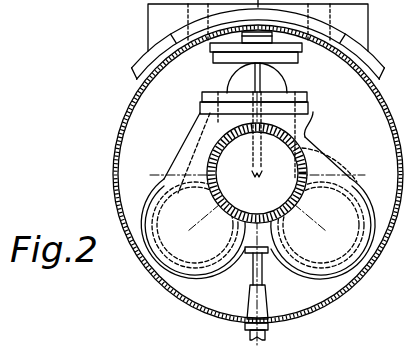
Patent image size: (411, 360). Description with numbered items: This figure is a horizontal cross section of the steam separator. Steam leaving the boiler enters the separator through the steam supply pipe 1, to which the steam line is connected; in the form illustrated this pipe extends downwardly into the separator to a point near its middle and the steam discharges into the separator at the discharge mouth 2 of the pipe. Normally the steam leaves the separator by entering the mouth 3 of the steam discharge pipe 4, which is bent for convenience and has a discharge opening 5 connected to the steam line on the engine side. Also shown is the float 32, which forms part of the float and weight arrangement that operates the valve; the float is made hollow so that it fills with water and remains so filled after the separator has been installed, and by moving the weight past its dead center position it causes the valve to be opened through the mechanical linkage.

The steam supply pipe 1 is at (257, 173).
The discharge mouth 2 is at (323, 195).
The mouth 3 is at (279, 93).
The steam discharge pipe 4 is at (193, 196).
The discharge opening 5 is at (256, 138).
The float 32 is at (236, 88).